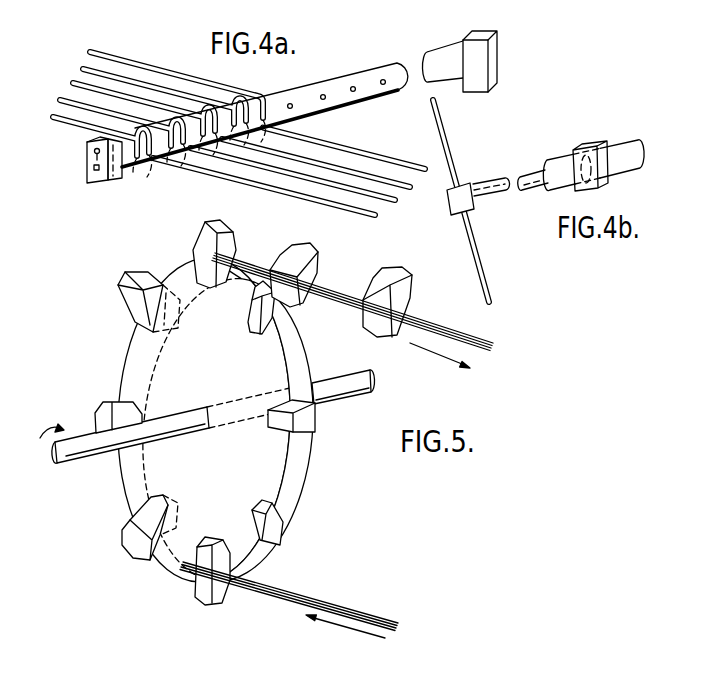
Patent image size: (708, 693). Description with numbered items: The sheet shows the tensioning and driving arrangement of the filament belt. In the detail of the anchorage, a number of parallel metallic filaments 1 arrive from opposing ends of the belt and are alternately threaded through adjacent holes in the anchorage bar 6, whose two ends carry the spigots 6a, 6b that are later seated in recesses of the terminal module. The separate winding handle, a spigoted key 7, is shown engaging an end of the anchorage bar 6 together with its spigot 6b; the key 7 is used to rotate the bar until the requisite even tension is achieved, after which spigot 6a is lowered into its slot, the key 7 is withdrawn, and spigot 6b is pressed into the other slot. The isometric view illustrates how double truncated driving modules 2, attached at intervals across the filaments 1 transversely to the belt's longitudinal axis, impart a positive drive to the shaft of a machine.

In FIG. 4A, the metallic filaments 1 is at (128, 78).
In FIG. 5, the metallic filaments 1 is at (491, 342).
In FIG. 5, the driving module 2 is at (398, 268).
In FIG. 4A, the anchorage bar 6 is at (440, 58).
In FIG. 4B, the anchorage bar 6 is at (622, 147).
In FIG. 4A, the spigot 6a is at (493, 55).
In FIG. 4A, the spigot 6b is at (112, 181).
In FIG. 4B, the spigot 6b is at (583, 144).
In FIG. 4B, the spigoted key 7 is at (497, 201).